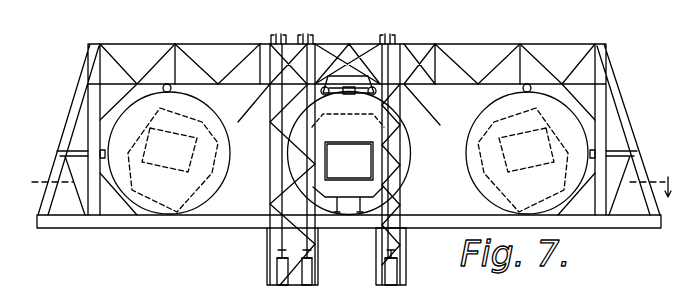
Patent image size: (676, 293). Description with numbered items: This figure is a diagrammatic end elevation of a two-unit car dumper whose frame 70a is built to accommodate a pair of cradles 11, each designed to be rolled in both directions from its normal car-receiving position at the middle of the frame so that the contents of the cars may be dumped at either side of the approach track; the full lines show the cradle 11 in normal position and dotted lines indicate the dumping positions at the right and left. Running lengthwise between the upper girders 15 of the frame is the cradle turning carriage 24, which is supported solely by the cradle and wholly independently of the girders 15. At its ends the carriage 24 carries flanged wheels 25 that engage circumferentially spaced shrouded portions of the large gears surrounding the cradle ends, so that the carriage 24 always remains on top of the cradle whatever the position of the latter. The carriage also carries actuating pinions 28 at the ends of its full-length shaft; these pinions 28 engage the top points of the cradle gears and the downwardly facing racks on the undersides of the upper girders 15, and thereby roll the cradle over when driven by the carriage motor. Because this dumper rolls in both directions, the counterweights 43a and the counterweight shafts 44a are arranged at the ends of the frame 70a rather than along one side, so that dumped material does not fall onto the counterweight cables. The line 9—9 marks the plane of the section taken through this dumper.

The section line 9— 9 is at (342, 186).
The drum 11 is at (215, 112).
The upper girders 15 is at (252, 185).
The cradle turning carriage 24 is at (358, 78).
The flanged wheels 25 is at (317, 87).
The actuating pinions 28 is at (172, 88).
The counterweights 43a is at (310, 278).
The counterweight shafts 44a is at (398, 211).
The base beam 70a is at (203, 229).